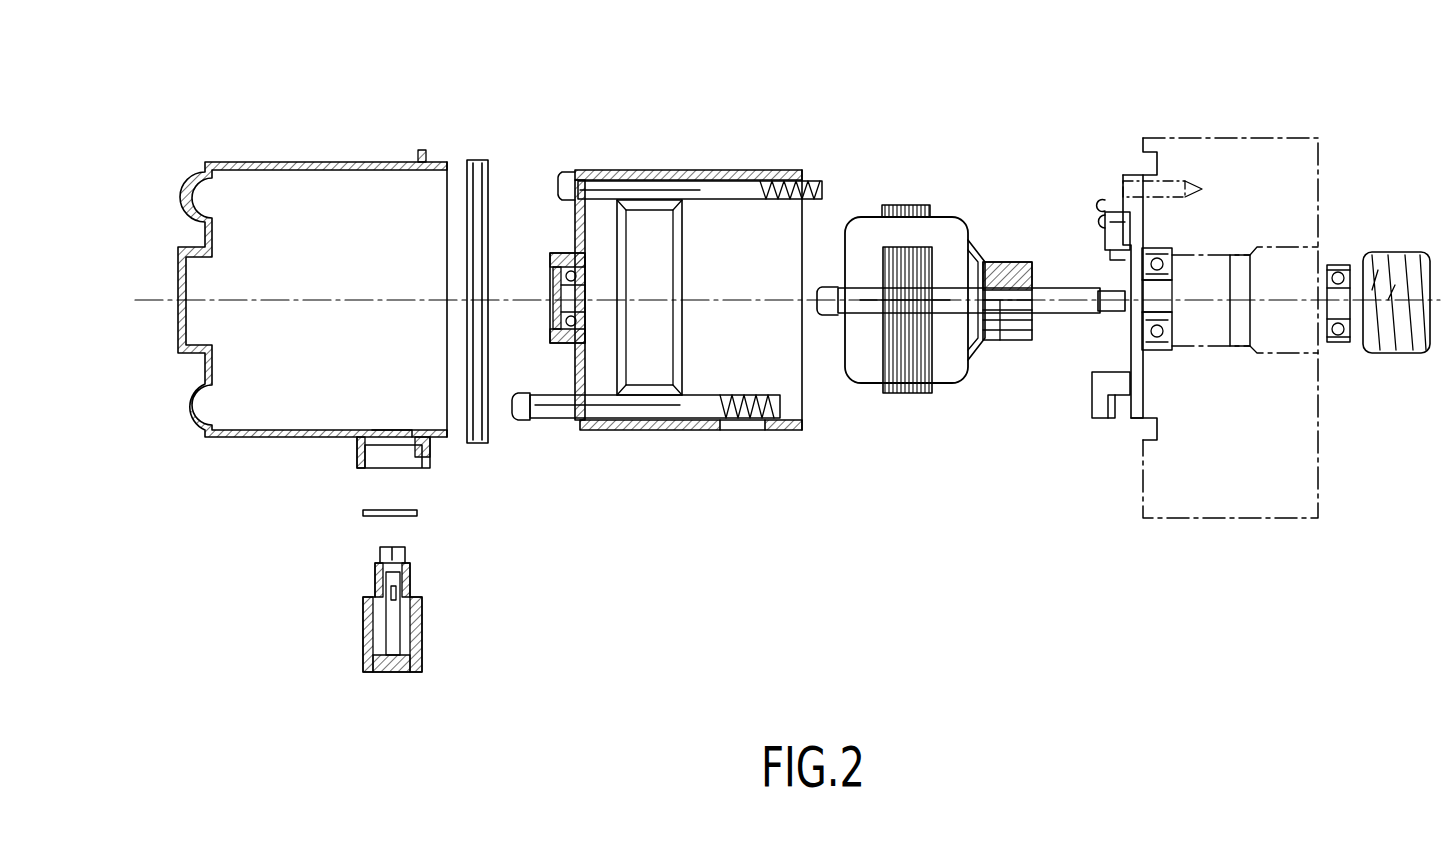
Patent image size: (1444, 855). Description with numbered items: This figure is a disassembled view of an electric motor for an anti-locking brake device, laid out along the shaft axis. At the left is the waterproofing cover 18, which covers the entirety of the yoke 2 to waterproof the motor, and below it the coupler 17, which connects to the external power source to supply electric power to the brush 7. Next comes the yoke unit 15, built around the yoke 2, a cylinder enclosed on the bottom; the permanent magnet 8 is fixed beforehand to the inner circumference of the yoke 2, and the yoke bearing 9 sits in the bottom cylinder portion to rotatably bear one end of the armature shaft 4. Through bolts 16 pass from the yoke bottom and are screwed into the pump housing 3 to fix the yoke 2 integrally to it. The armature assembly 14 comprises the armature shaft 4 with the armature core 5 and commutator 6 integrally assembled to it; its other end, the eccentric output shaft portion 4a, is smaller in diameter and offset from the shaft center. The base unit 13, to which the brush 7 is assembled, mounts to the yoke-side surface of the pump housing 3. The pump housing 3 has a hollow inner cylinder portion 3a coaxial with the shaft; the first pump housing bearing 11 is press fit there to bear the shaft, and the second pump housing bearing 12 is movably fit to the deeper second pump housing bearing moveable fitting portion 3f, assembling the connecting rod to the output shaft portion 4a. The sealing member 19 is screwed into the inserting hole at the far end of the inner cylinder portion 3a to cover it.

The yoke 2 is at (725, 170).
The pump housing 3 is at (1220, 330).
The inner cylinder portion 3a is at (1212, 322).
The second pump housing bearing moveable fitting portion 3f is at (1190, 327).
The armature shaft 4 is at (971, 322).
The eccentric output shaft portion 4a is at (1103, 298).
The armature core 5 is at (863, 375).
The commutator 6 is at (1018, 320).
The brush 7 is at (1102, 243).
The permanent magnet 8 is at (652, 378).
The yoke bearing 9 is at (562, 256).
The first pump housing bearing 11 is at (1129, 318).
The second pump housing bearing 12 is at (1337, 266).
The base unit 13 is at (1138, 232).
The armature assembly 14 is at (971, 271).
The yoke unit 15 is at (667, 268).
The through bolts 16 is at (712, 408).
The coupler 17 is at (392, 628).
The waterproofing cover 18 is at (300, 163).
The sealing member 19 is at (1398, 355).